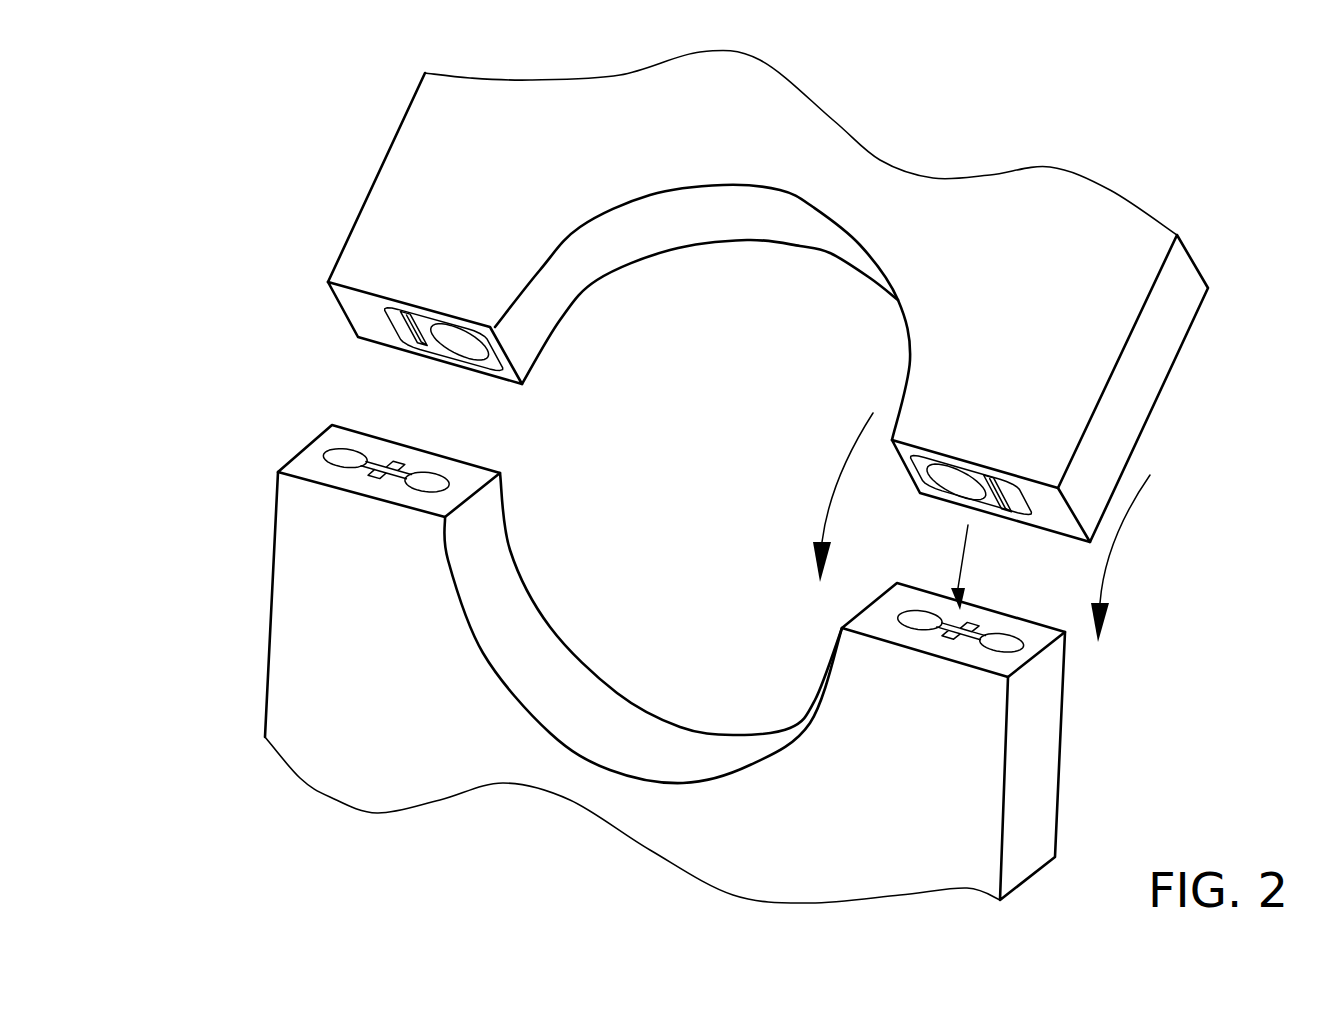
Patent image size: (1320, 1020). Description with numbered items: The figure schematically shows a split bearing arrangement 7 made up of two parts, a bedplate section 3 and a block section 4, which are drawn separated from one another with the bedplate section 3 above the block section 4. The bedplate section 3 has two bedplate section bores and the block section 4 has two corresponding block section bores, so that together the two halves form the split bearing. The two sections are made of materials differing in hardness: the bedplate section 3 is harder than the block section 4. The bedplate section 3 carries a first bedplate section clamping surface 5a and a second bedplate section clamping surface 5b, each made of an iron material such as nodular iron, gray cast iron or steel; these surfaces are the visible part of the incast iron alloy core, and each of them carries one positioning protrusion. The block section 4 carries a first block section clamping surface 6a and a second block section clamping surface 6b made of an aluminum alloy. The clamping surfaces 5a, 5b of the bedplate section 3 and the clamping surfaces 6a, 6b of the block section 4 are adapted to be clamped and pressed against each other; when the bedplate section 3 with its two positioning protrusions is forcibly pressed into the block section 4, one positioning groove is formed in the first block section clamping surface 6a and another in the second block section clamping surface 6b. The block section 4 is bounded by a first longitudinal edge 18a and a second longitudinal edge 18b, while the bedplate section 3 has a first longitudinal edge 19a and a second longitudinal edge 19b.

The split bearing arrangement 7 is at (188, 141).
The bedplate section 3 is at (422, 193).
The block section 4 is at (312, 637).
The first bedplate section clamping surface 5a is at (405, 337).
The second bedplate section clamping surface 5b is at (930, 503).
The first block section clamping surface 6a is at (377, 445).
The second block section clamping surface 6b is at (878, 613).
The first longitudinal edge 18a is at (307, 442).
The second longitudinal edge 18b is at (1040, 657).
The first longitudinal edge 19a is at (340, 308).
The second longitudinal edge 19b is at (1077, 518).